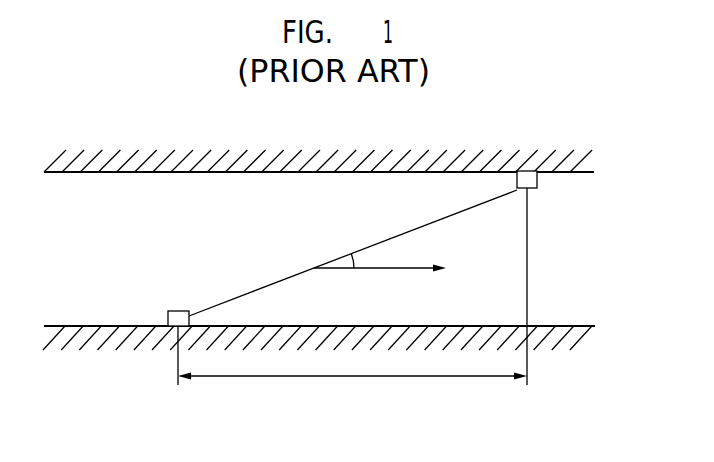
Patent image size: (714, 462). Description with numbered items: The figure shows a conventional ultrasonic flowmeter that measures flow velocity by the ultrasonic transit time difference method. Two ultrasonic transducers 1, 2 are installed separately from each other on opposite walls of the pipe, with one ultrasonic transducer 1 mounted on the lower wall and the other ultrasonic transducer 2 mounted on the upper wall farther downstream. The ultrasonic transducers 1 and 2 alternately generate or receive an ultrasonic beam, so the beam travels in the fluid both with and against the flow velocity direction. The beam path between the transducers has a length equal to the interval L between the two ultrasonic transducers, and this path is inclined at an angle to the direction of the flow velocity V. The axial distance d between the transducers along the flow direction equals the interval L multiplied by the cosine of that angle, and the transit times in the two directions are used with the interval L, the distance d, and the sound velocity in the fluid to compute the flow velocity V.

The ultrasonic transducer 1 is at (168, 319).
The ultrasonic transducer 2 is at (537, 178).
The interval between two ultrasonic transducers L is at (353, 253).
The flow velocity V is at (389, 268).
The axial distance d is at (352, 286).